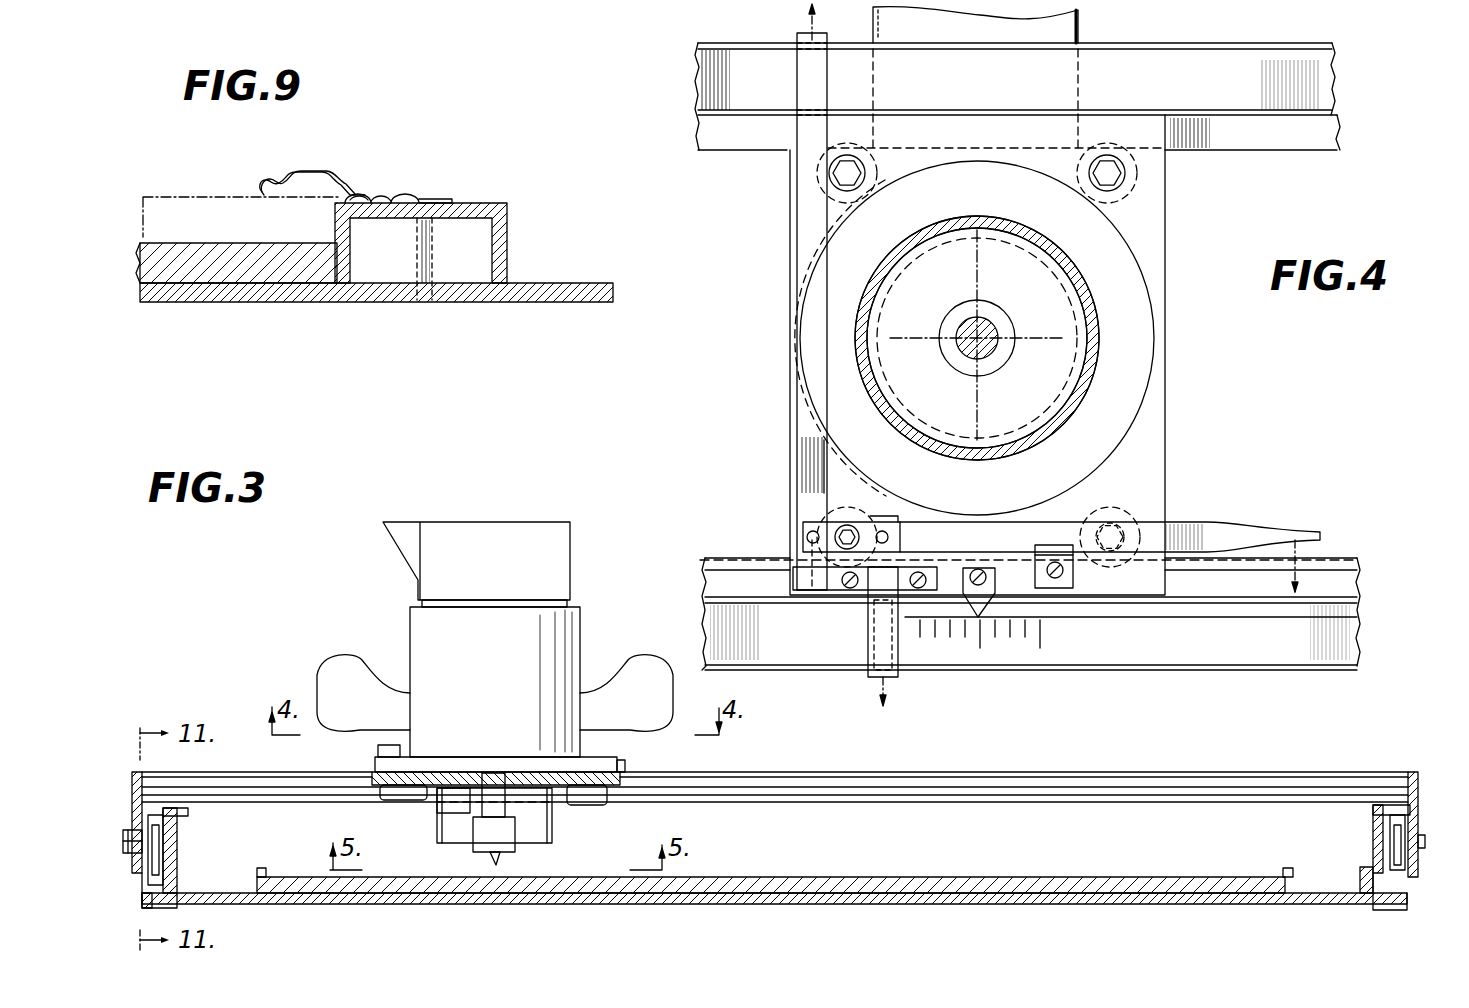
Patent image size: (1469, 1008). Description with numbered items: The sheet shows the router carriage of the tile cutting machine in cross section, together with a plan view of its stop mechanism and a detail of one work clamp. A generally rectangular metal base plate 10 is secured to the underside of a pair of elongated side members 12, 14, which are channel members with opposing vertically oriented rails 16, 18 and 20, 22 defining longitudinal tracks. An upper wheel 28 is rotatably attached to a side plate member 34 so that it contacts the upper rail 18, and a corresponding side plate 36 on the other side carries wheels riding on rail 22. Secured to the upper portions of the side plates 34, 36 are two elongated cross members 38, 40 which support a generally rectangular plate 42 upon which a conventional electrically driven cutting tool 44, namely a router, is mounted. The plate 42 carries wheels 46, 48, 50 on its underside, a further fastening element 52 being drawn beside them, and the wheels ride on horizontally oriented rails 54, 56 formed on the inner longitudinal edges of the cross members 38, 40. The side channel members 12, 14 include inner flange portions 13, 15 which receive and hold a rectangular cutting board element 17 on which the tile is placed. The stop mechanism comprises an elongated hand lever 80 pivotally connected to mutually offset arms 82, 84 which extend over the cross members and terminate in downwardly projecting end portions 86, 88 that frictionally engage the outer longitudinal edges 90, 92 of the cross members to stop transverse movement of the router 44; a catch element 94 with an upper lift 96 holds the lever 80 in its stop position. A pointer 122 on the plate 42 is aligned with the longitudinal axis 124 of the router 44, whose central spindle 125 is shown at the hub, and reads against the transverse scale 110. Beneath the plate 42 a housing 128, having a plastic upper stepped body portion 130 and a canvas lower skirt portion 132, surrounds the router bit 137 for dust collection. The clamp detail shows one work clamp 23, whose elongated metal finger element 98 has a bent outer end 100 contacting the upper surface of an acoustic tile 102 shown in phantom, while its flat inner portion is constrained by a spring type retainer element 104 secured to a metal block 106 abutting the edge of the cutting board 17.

In FIG. 9, the base plate 10 is at (462, 292).
In FIG. 3, the base plate 10 is at (830, 905).
In FIG. 3, the side member 12 is at (178, 836).
In FIG. 3, the inner flange portion 13 is at (258, 874).
In FIG. 3, the side member 14 is at (1374, 832).
In FIG. 3, the inner flange portion 15 is at (1286, 868).
In FIG. 3, the rail 16 is at (150, 880).
In FIG. 9, the cutting board element 17 is at (302, 270).
In FIG. 3, the cutting board element 17 is at (915, 877).
In FIG. 3, the rail 18 is at (152, 826).
In FIG. 3, the rail 20 is at (1406, 894).
In FIG. 3, the rail 22 is at (1406, 826).
In FIG. 9, the work clamp 23 is at (347, 165).
In FIG. 3, the upper wheel 28 is at (126, 838).
In FIG. 3, the side plate member 34 is at (136, 776).
In FIG. 3, the side plate 36 is at (1416, 772).
In FIG. 4, the cross member 38 is at (1332, 86).
In FIG. 3, the cross member 38 is at (985, 772).
In FIG. 4, the cross member 40 is at (1360, 610).
In FIG. 4, the plate 42 is at (1152, 436).
In FIG. 3, the plate 42 is at (616, 776).
In FIG. 4, the cutting tool 44 is at (1068, 270).
In FIG. 3, the cutting tool 44 is at (576, 646).
In FIG. 4, the wheel 46 is at (1138, 188).
In FIG. 3, the wheel 46 is at (600, 806).
In FIG. 4, the wheel 48 is at (876, 168).
In FIG. 3, the wheel 48 is at (386, 800).
In FIG. 4, the wheel 50 is at (1150, 512).
In FIG. 4, the clamp bar 52 is at (846, 508).
In FIG. 4, the rail 54 is at (1287, 152).
In FIG. 3, the rail 54 is at (906, 803).
In FIG. 4, the rail 56 is at (1338, 558).
In FIG. 4, the hand lever 80 is at (1204, 524).
In FIG. 4, the arm 82 is at (872, 660).
In FIG. 4, the arm 84 is at (803, 420).
In FIG. 4, the end portion 86 is at (895, 684).
In FIG. 4, the end portion 88 is at (812, 30).
In FIG. 4, the outer longitudinal edge 90 is at (986, 672).
In FIG. 4, the outer longitudinal edge 92 is at (1042, 43).
In FIG. 4, the catch element 94 is at (1073, 574).
In FIG. 4, the upper lift 96 is at (1052, 545).
In FIG. 9, the finger element 98 is at (300, 175).
In FIG. 9, the outer end 100 is at (262, 195).
In FIG. 9, the acoustic tile 102 is at (168, 205).
In FIG. 9, the spring type retainer element 104 is at (368, 196).
In FIG. 9, the metal block 106 is at (498, 216).
In FIG. 4, the transverse scale 110 is at (1080, 655).
In FIG. 4, the pointer 122 is at (986, 612).
In FIG. 4, the longitudinal axis 124 is at (978, 412).
In FIG. 4, the spindle 125 is at (1050, 338).
In FIG. 4, the housing 128 is at (1078, 100).
In FIG. 3, the housing 128 is at (553, 838).
In FIG. 3, the upper stepped body portion 130 is at (440, 818).
In FIG. 3, the lower skirt portion 132 is at (437, 840).
In FIG. 3, the router bit 137 is at (478, 838).